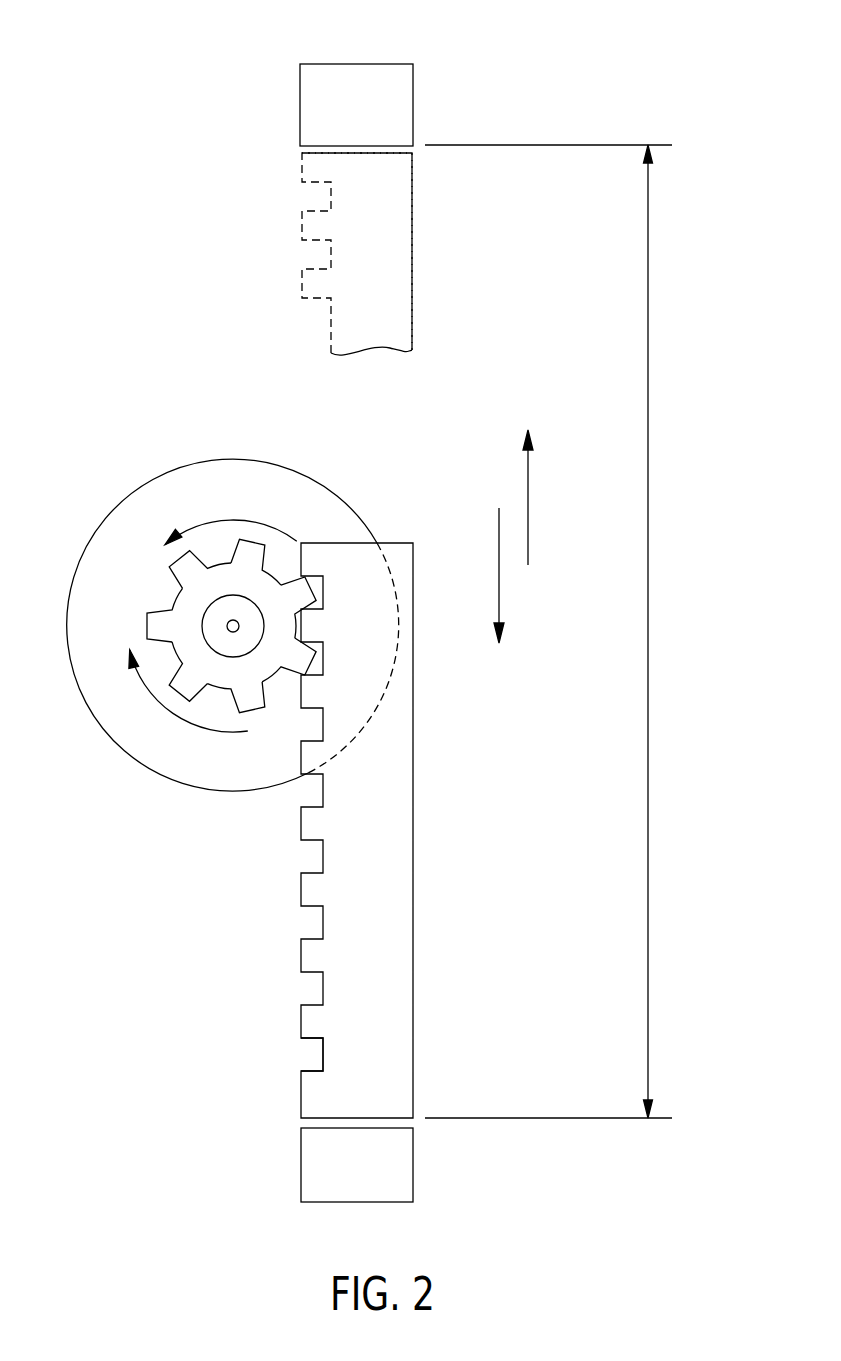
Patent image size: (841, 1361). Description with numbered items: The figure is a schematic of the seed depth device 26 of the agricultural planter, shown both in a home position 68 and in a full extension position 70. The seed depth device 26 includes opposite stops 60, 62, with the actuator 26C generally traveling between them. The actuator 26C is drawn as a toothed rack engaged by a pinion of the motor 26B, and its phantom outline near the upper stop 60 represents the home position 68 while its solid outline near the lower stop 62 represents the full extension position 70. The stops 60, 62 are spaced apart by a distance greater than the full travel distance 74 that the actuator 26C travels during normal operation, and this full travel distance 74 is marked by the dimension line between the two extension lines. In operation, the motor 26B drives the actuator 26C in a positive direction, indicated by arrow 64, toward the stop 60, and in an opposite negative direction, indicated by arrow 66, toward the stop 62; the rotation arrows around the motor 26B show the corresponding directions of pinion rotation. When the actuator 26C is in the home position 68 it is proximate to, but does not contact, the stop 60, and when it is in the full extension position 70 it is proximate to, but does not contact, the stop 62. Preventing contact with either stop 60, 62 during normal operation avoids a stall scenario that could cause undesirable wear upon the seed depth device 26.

The seed depth device 26 is at (605, 82).
The motor 26B is at (152, 772).
The actuator 26C is at (413, 280).
The stop 60 is at (413, 104).
The stop 62 is at (413, 1165).
The arrow 64 is at (222, 520).
The arrow 66 is at (158, 702).
The home position 68 is at (437, 210).
The full extension position 70 is at (437, 1045).
The full travel distance 74 is at (648, 857).